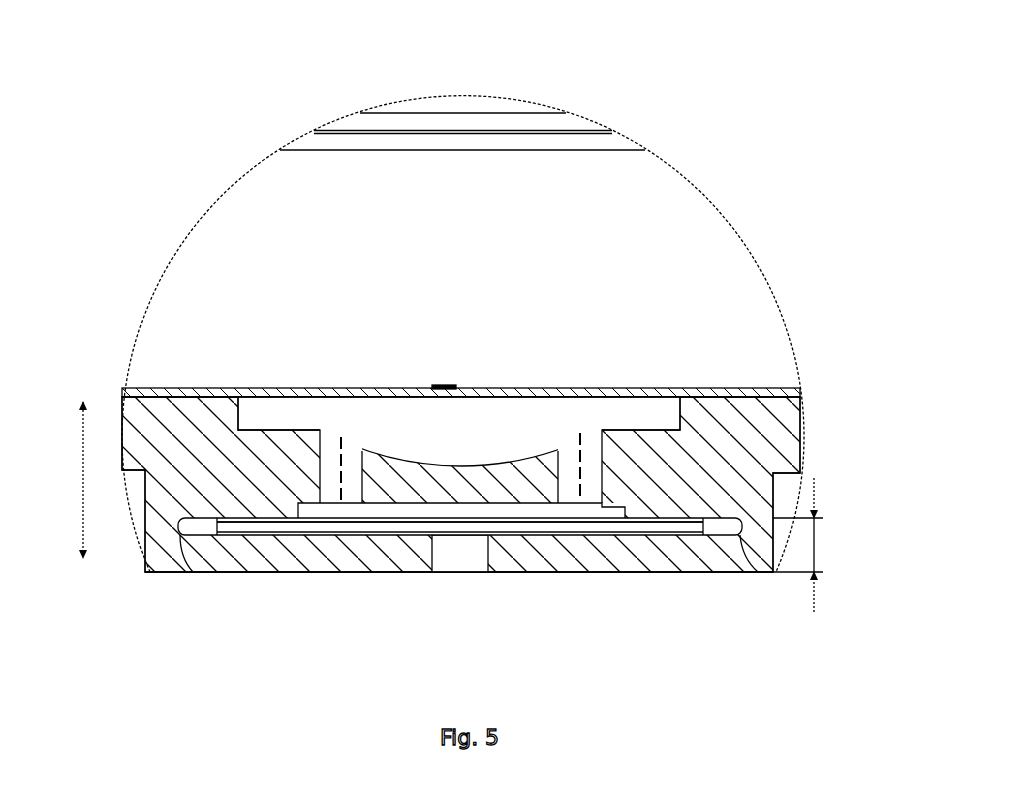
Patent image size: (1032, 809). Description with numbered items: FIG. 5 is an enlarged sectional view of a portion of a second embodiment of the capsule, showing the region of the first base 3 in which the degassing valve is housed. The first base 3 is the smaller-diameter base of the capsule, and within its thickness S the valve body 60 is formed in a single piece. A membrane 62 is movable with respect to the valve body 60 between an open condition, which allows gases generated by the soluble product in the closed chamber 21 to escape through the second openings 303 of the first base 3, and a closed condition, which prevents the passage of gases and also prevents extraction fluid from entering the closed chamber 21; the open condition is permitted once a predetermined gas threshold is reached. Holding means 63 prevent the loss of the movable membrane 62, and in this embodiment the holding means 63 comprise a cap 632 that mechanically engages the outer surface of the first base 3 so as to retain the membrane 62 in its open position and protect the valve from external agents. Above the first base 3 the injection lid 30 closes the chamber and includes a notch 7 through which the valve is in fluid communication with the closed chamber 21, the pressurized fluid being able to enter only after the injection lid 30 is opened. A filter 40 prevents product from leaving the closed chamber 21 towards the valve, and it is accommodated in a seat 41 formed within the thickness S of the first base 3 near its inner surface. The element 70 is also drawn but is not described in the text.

The first base 3 is at (822, 412).
The notch 7 is at (450, 387).
The closed chamber 21 is at (476, 244).
The injection lid 30 is at (294, 386).
The filter 40 is at (388, 428).
The seat 41 is at (688, 410).
The valve body 60 is at (725, 443).
The membrane 62 is at (623, 528).
The holding means 63 is at (279, 580).
The cap 632 is at (548, 535).
The base ring 70 is at (204, 573).
The second openings 303 is at (333, 455).
The thickness S is at (57, 480).